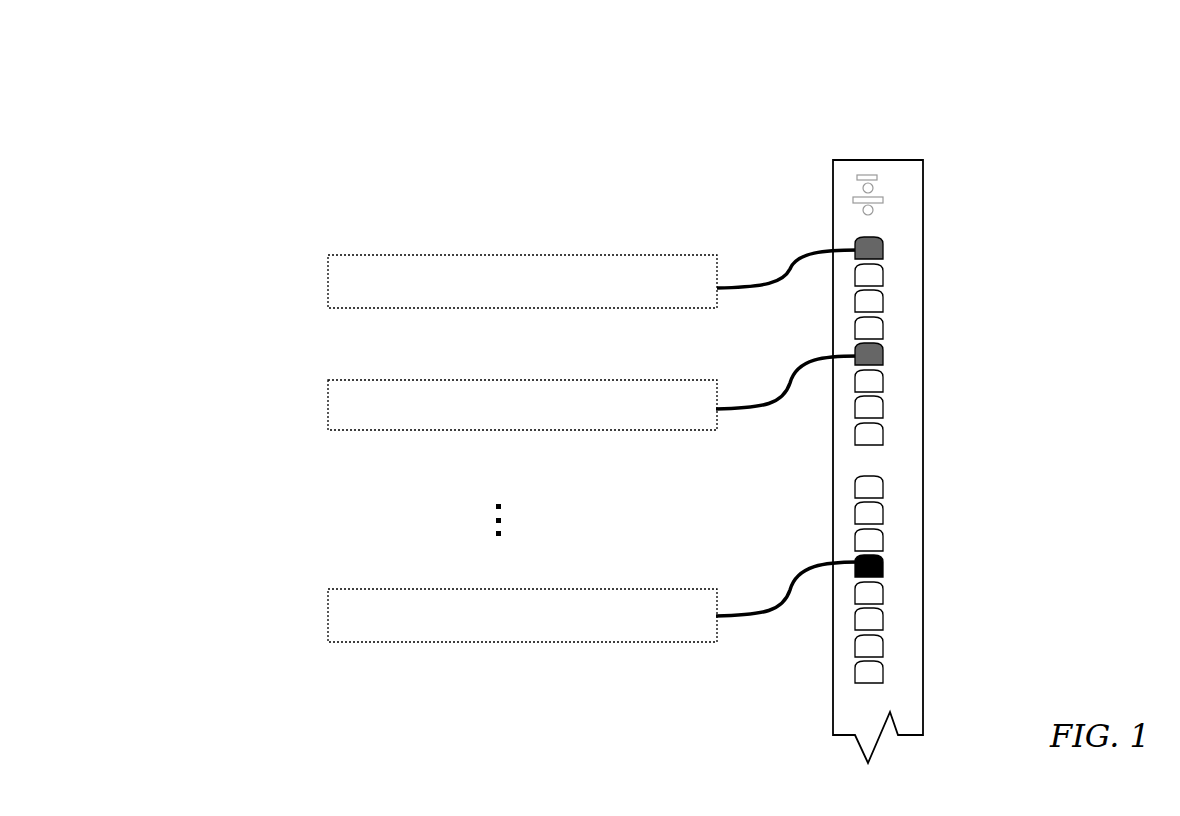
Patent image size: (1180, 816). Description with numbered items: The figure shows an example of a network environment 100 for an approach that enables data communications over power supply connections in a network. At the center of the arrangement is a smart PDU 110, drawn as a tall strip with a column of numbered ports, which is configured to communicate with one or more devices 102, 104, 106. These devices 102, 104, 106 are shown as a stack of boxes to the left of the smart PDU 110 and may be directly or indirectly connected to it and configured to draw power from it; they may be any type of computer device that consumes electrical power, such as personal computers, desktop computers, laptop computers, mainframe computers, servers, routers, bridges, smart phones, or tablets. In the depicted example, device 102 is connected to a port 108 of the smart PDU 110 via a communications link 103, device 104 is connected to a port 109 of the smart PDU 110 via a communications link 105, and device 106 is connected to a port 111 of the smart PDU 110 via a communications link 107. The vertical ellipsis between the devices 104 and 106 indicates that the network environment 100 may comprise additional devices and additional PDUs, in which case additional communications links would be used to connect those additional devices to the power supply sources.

The network environment 100 is at (366, 163).
The device 102 is at (374, 288).
The communications link 103 is at (786, 256).
The device 104 is at (374, 412).
The communications link 105 is at (780, 368).
The device 106 is at (374, 623).
The communications link 107 is at (783, 576).
The port 108 is at (887, 242).
The port 109 is at (889, 351).
The smart PDU 110 is at (883, 426).
The port 111 is at (890, 558).